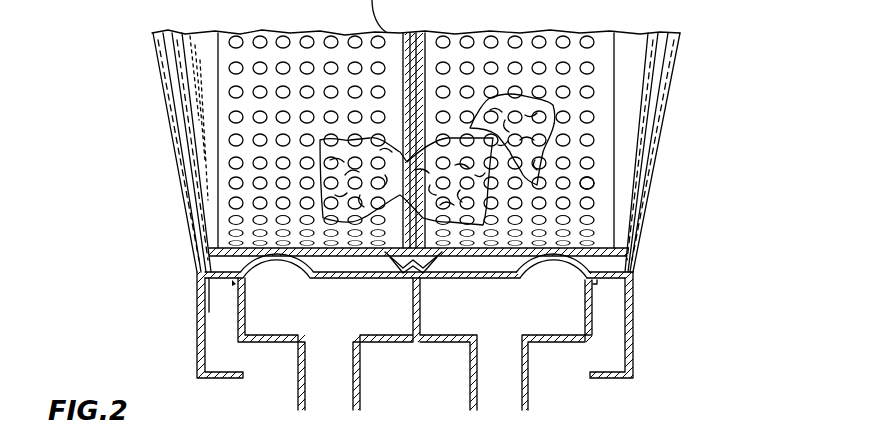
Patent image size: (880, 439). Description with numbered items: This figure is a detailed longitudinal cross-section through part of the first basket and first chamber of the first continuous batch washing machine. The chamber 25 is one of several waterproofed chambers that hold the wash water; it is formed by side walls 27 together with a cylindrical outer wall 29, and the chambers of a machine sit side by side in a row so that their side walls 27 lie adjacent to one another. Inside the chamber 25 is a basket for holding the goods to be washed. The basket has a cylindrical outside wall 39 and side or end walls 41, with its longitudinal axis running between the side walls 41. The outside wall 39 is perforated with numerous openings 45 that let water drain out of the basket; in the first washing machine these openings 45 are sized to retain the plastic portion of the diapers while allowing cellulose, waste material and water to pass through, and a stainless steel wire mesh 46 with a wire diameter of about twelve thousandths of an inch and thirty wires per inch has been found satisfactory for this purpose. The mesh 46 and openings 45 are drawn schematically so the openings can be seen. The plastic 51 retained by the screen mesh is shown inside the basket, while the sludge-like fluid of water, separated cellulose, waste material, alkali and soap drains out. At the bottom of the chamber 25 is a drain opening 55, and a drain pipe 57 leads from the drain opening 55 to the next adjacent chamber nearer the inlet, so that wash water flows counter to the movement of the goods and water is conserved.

The chamber 25 is at (190, 189).
The side wall 27 is at (185, 137).
The cylindrical outer wall 29 is at (222, 262).
The outside wall 39 is at (595, 257).
The side wall 41 is at (627, 77).
The opening 45 is at (592, 182).
The wire mesh 46 is at (578, 133).
The plastic 51 is at (487, 200).
The drain opening 55 is at (560, 270).
The drain pipe 57 is at (533, 387).